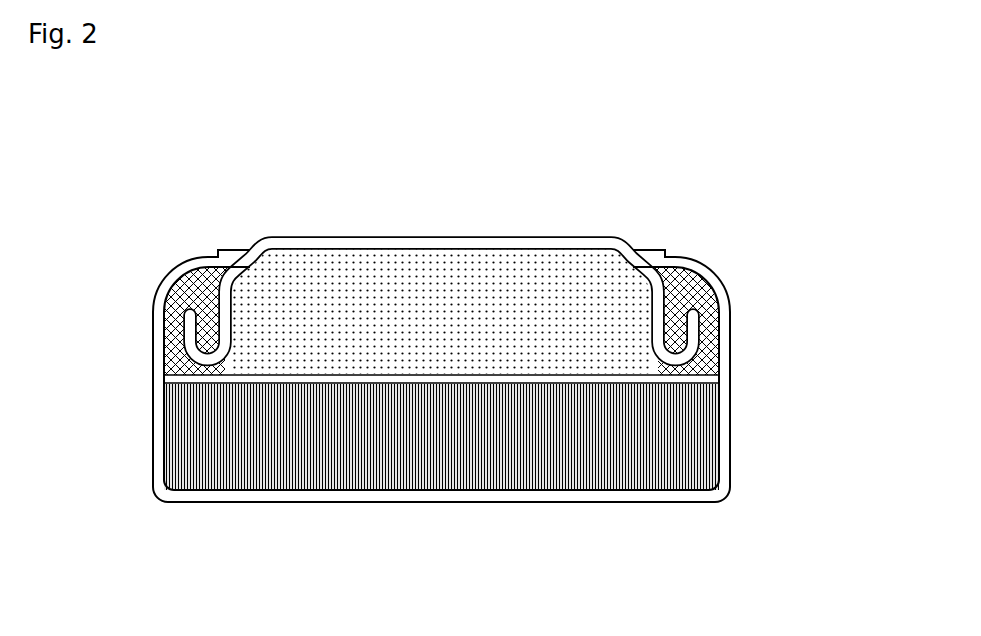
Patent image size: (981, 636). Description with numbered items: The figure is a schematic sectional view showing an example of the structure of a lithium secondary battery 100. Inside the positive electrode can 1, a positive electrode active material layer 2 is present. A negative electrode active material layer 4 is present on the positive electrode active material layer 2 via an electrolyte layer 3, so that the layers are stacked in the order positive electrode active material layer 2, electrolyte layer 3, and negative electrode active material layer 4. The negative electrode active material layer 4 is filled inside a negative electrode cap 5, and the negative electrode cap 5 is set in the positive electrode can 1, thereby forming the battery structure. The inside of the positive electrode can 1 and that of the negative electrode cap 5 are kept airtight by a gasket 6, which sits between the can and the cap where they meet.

The lithium secondary battery 100 is at (613, 202).
The positive electrode can 1 is at (725, 443).
The positive electrode active material layer 2 is at (212, 440).
The electrolyte layer 3 is at (708, 377).
The negative electrode active material layer 4 is at (452, 262).
The negative electrode cap 5 is at (225, 298).
The gasket 6 is at (700, 283).